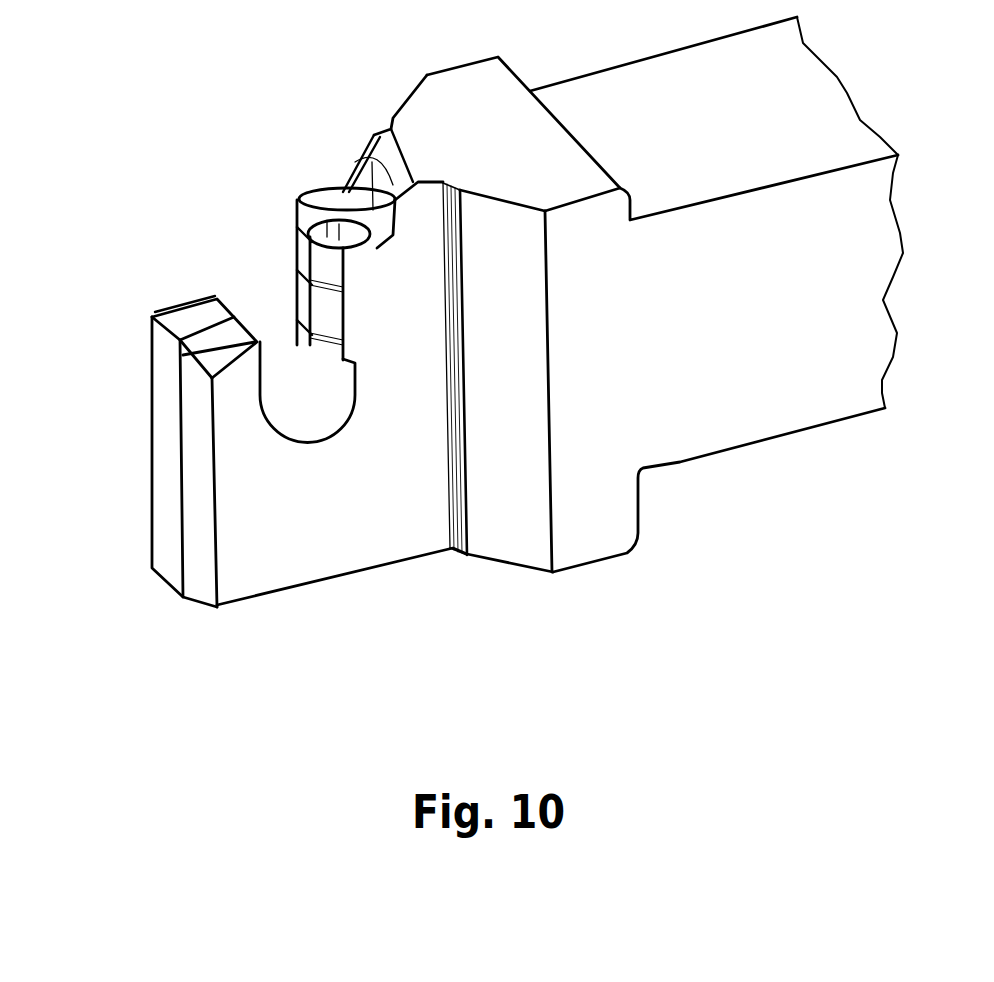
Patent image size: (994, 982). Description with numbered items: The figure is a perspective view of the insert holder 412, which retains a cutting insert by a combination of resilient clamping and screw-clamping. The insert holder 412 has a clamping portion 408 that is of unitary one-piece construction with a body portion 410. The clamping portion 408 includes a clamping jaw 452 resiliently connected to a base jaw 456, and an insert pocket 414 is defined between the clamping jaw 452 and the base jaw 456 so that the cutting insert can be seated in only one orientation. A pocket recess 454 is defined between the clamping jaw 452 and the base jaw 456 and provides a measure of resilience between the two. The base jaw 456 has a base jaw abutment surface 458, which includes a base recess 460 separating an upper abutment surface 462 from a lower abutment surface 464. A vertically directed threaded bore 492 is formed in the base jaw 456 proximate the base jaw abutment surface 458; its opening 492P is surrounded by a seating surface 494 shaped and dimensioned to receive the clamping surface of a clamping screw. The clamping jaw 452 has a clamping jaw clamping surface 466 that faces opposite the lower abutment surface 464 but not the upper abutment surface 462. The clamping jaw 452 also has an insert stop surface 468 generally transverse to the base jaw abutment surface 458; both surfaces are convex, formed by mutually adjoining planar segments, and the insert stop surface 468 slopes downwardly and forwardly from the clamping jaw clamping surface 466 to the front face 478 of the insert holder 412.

The clamping portion 408 is at (365, 613).
The body portion 410 is at (730, 505).
The insert holder 412 is at (230, 40).
The insert pocket 414 is at (150, 237).
The clamping jaw 452 is at (237, 397).
The pocket recess 454 is at (307, 427).
The base jaw 456 is at (368, 272).
The base jaw abutment surface 458 is at (212, 194).
The base recess 460 is at (266, 352).
The upper abutment surface 462 is at (295, 248).
The lower abutment surface 464 is at (328, 365).
The clamping jaw clamping surface 466 is at (295, 291).
The insert stop surface 468 is at (180, 310).
The front face 478 is at (167, 364).
The threaded bore 492 is at (338, 218).
The opening 492P is at (300, 198).
The seating surface 494 is at (362, 150).